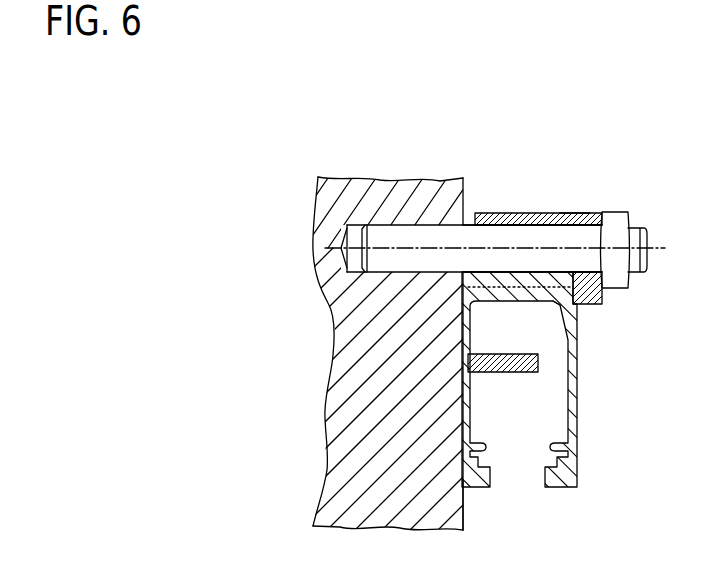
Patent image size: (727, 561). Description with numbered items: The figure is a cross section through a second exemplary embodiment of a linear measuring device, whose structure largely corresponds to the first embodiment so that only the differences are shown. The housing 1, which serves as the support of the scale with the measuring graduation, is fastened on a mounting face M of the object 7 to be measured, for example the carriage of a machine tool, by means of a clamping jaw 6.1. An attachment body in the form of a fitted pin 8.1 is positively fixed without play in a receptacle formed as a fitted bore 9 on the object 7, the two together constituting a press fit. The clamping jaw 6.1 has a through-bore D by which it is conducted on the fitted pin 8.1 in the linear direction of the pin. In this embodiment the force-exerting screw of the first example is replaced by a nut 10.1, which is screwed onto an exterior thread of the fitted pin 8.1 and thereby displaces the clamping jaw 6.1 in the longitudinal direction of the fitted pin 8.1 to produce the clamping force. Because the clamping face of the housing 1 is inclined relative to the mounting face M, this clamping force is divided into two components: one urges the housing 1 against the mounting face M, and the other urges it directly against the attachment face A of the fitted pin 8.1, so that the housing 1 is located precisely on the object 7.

The fitted bore 9 is at (350, 237).
The fitted pin 8.1 is at (468, 243).
The clamping jaw 6.1 is at (514, 218).
The through-bore D is at (573, 214).
The nut 10.1 is at (617, 227).
The housing 1 is at (572, 479).
The attachment face A is at (533, 277).
The object to be measured 7 is at (352, 482).
The mounting face M is at (463, 518).